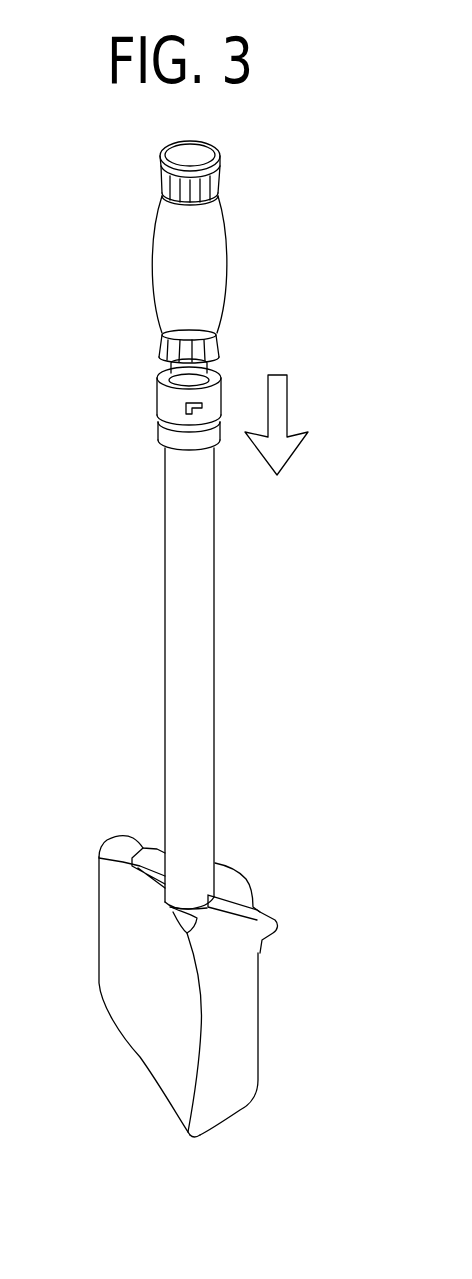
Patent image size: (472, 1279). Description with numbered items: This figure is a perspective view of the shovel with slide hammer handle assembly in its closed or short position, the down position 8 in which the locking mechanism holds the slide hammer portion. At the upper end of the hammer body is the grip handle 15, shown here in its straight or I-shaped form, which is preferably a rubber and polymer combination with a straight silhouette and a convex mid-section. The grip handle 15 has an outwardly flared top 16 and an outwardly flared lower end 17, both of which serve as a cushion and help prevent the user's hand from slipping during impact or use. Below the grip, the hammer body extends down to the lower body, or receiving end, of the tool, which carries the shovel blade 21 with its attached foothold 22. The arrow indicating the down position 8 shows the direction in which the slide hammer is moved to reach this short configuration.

The down position 8 is at (280, 425).
The grip handle 15 is at (225, 252).
The outwardly flared top 16 is at (160, 165).
The lower end 17 is at (160, 352).
The shovel blade 21 is at (100, 923).
The foothold 22 is at (247, 887).